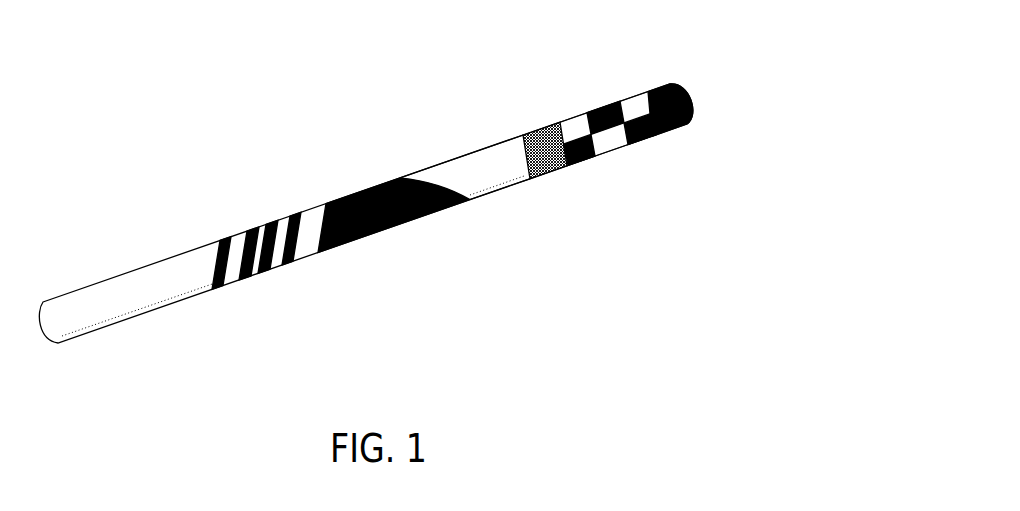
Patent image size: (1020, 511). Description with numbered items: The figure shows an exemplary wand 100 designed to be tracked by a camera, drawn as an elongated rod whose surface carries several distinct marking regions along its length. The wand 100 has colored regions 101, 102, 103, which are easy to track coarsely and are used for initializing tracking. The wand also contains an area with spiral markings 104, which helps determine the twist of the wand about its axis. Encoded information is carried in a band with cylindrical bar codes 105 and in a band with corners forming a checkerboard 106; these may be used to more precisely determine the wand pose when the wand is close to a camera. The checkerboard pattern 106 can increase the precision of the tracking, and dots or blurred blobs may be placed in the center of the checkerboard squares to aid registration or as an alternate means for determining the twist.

The wand 100 is at (672, 82).
The colored region 101 is at (342, 244).
The colored region 102 is at (557, 170).
The colored region 103 is at (682, 126).
The spiral markings 104 is at (440, 164).
The band with cylindrical bar codes 105 is at (255, 228).
The checkerboard pattern 106 is at (598, 108).